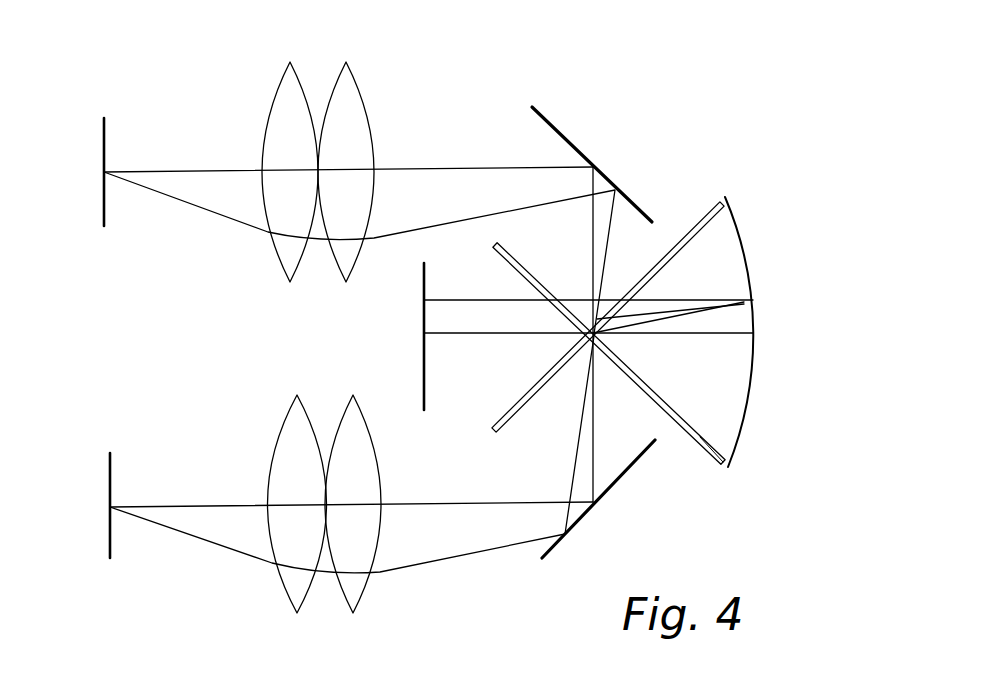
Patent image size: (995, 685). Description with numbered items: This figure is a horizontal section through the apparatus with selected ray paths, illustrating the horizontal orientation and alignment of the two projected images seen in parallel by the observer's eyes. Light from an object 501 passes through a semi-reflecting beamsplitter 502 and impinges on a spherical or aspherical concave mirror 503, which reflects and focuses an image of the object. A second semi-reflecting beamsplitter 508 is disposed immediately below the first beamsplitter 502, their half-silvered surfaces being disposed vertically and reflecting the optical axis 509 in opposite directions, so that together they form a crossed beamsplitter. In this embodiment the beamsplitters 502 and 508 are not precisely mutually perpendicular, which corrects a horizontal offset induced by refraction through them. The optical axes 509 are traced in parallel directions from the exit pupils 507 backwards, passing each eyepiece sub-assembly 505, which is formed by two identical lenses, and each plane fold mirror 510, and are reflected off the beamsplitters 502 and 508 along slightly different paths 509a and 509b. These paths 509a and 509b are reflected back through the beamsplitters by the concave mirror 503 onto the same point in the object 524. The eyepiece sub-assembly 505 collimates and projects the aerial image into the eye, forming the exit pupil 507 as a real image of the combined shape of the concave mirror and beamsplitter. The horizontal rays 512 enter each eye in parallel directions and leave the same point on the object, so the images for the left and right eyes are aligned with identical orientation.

The object 501 is at (428, 373).
The semi-reflecting beamsplitter 502 is at (687, 236).
The concave mirror 503 is at (741, 430).
The eyepiece sub-assembly 505 is at (346, 72).
The exit pupil 507 is at (100, 137).
The second semi-reflecting beamsplitter 508 is at (690, 440).
The optical axis 509 is at (452, 166).
The reflected optical path 509a is at (715, 337).
The reflected optical path 509b is at (738, 322).
The plane fold mirror 510 is at (566, 140).
The horizontal rays 512 is at (171, 198).
The object point 524 is at (423, 320).